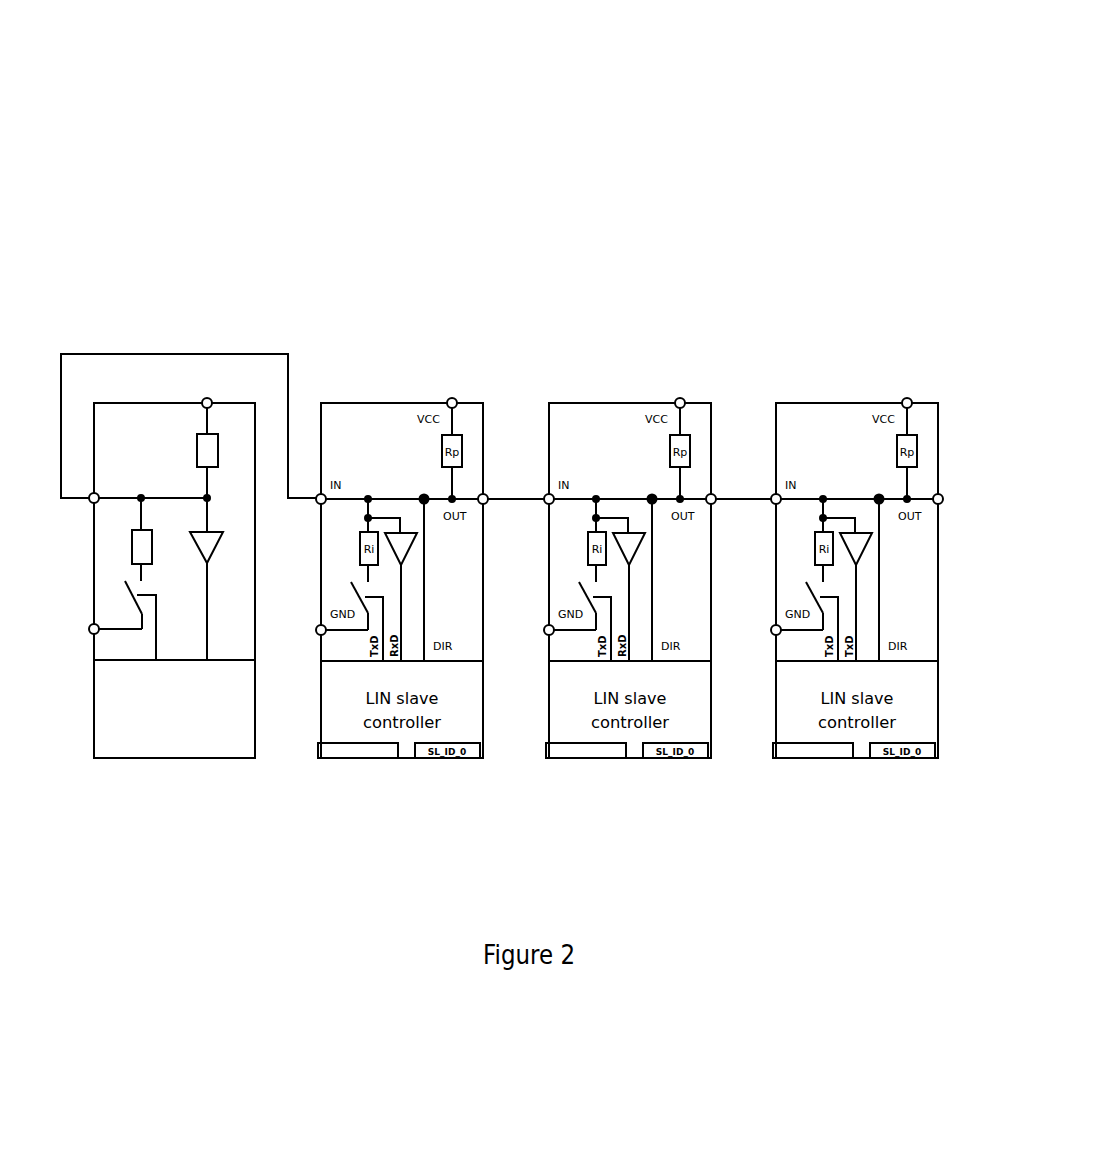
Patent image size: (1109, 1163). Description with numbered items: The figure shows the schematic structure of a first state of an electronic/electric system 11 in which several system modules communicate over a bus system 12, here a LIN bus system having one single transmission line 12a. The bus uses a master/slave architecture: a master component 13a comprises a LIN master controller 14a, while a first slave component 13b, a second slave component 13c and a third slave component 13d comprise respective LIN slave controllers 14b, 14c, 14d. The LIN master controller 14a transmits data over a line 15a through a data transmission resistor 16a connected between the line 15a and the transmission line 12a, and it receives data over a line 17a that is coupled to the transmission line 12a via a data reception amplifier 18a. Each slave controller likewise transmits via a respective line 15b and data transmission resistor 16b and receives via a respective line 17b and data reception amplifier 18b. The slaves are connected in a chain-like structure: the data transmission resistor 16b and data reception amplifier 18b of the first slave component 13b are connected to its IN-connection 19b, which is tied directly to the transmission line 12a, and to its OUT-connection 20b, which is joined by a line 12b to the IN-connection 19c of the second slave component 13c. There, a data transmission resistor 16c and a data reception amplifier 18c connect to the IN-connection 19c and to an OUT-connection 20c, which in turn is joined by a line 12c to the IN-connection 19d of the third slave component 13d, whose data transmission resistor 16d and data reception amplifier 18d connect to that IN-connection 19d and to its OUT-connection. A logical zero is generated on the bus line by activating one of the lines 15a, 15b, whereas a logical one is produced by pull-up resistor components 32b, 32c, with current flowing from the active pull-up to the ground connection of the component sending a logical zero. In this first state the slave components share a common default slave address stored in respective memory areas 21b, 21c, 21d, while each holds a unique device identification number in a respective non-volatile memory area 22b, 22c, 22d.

The system 11 is at (473, 92).
The bus system 12 is at (257, 320).
The transmission line 12a is at (168, 353).
The line 12b is at (510, 497).
The line 12c is at (737, 491).
The master component 13a is at (169, 621).
The first slave component 13b is at (407, 621).
The second slave component 13c is at (634, 621).
The third slave component 13d is at (836, 624).
The LIN master controller 14a is at (113, 750).
The LIN slave controller 14b is at (470, 702).
The LIN slave controller 14c is at (695, 708).
The LIN slave controller 14d is at (787, 693).
The line 15a is at (160, 608).
The line 15b is at (375, 594).
The data transmission resistor 16a is at (155, 539).
The data transmission resistor 16b is at (358, 546).
The data transmission resistor 16c is at (586, 547).
The data transmission resistor 16d is at (814, 549).
The line 17a is at (208, 597).
The line 17b is at (403, 615).
The data reception amplifier 18a is at (218, 547).
The data reception amplifier 18b is at (413, 527).
The data reception amplifier 18c is at (641, 527).
The data reception amplifier 18d is at (868, 528).
The IN-connection 19b is at (318, 504).
The IN-connection 19c is at (545, 494).
The IN-connection 19d is at (771, 493).
The OUT-connection 20b is at (486, 506).
The OUT-connection 20c is at (714, 506).
The memory area 21b is at (487, 758).
The memory area 21c is at (713, 752).
The memory area 21d is at (898, 758).
The memory area 22b is at (333, 760).
The memory area 22c is at (572, 763).
The memory area 22d is at (798, 760).
The pull-up resistor component 32b is at (441, 452).
The pull-up resistor component 32c is at (669, 452).